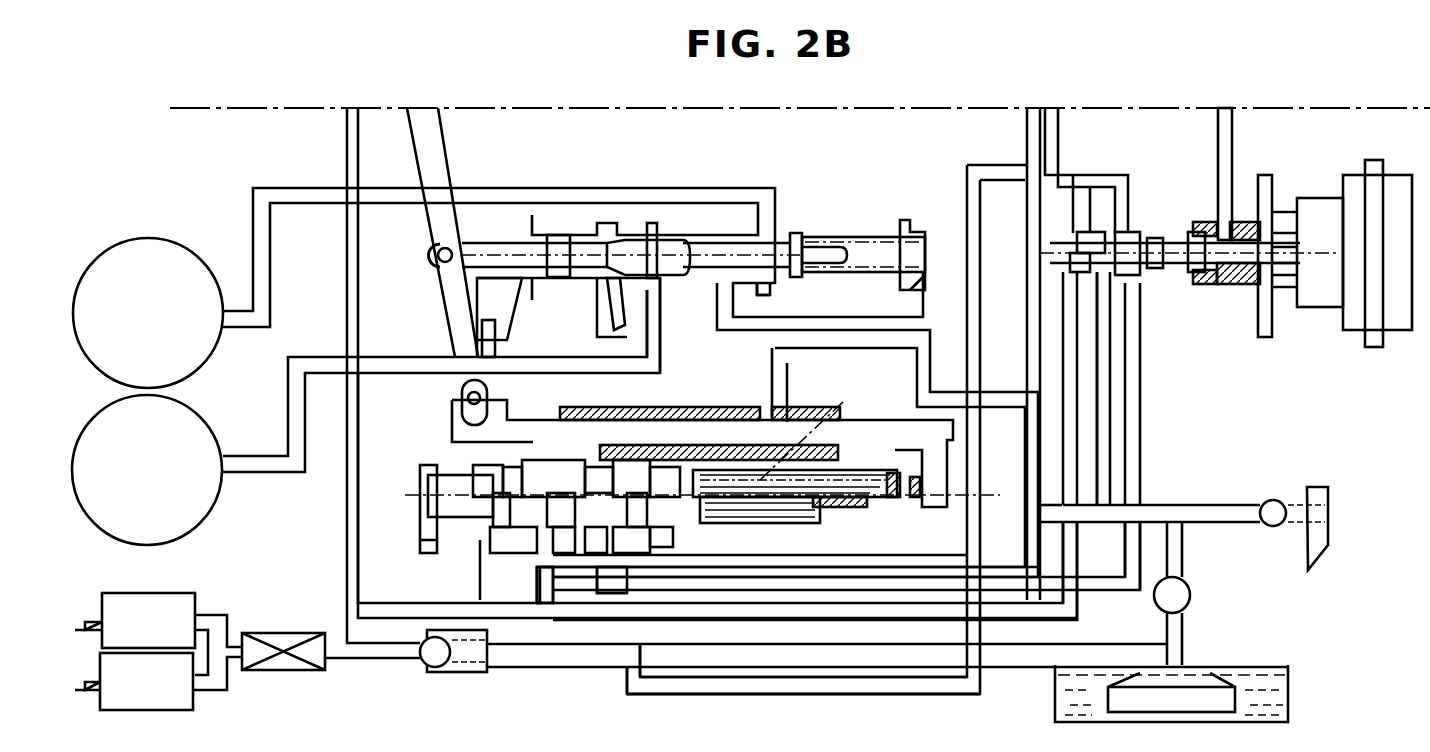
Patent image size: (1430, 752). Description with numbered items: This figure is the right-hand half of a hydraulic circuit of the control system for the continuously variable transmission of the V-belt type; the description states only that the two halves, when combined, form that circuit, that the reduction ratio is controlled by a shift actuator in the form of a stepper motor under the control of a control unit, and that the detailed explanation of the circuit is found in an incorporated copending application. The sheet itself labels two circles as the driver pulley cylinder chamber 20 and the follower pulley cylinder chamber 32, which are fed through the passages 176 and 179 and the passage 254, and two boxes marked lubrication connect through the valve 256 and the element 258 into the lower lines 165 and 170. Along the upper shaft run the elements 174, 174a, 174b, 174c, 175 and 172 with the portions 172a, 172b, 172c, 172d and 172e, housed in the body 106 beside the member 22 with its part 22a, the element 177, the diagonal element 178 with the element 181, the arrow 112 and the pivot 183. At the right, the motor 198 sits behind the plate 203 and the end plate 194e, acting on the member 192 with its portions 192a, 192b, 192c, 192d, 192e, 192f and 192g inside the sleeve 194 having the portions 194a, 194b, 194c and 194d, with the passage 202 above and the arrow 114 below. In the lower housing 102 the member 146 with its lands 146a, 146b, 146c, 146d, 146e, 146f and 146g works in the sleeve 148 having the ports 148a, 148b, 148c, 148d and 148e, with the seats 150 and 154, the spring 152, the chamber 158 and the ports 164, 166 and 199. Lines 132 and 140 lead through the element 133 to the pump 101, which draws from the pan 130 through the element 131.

The driver pulley cylinder chamber 20 is at (208, 522).
The movable wedge member 22 is at (512, 300).
The pin of wedge member 22a is at (492, 320).
The follower pulley cylinder chamber 32 is at (208, 365).
The oil pump 101 is at (1202, 592).
The valve housing 102 is at (425, 565).
The valve housing 106 is at (805, 186).
The belt tension direction 112 is at (409, 281).
The shaft direction 114 is at (1216, 362).
The oil pan 130 is at (1290, 680).
The oil filter 131 is at (1190, 683).
The oil passage 132 is at (833, 560).
The relief valve 133 is at (1280, 495).
The oil passage 140 is at (1112, 590).
The spool valve 146 is at (503, 492).
The spool land 146a is at (432, 528).
The spool land 146b is at (488, 585).
The spool land 146c is at (540, 485).
The spool land 146d is at (545, 590).
The spool land 146e is at (612, 600).
The spool land 146f is at (655, 560).
The spool land 146g is at (735, 470).
The valve sleeve 148 is at (430, 515).
The sleeve port 148a is at (458, 512).
The sleeve port 148b is at (423, 478).
The sleeve port 148c is at (578, 492).
The sleeve port 148d is at (635, 447).
The sleeve port 148e is at (680, 528).
The spring seat 150 is at (885, 510).
The spring 152 is at (845, 400).
The spring seat 154 is at (862, 500).
The valve chamber 158 is at (955, 430).
The oil port 164 is at (555, 640).
The oil passage 165 is at (685, 694).
The oil port 166 is at (520, 575).
The oil port 170 is at (700, 560).
The valve spool 172 is at (848, 238).
The spool land 172a is at (600, 295).
The spool land 172b is at (655, 290).
The oil passage 172c is at (692, 325).
The spool land 172d is at (770, 290).
The spool land 172e is at (915, 288).
The valve rod 174 is at (490, 245).
The rod collar 174a is at (558, 236).
The rod head 174b is at (688, 240).
The rod end 174c is at (782, 262).
The spring retainer 175 is at (900, 242).
The oil passage 176 is at (326, 378).
The lever 177 is at (620, 300).
The belt 178 is at (430, 158).
The oil passage 179 is at (310, 208).
The roller 181 is at (438, 252).
The pivot 183 is at (462, 410).
The valve spool 192 is at (1140, 232).
The spool land 192a is at (1073, 242).
The spool land 192b is at (1078, 272).
The oil passage 192c is at (1100, 272).
The oil passage 192d is at (1130, 272).
The spool land 192e is at (1155, 272).
The spool land 192f is at (1200, 284).
The spool land 192g is at (1225, 240).
The valve sleeve 194 is at (1070, 252).
The sleeve port 194a is at (1055, 232).
The sleeve port 194b is at (1070, 245).
The sleeve port 194c is at (1170, 215).
The sleeve port 194d is at (1195, 232).
The sleeve end plate 194e is at (1272, 215).
The stepper motor 198 is at (1387, 168).
The oil port 199 is at (622, 603).
The oil passage 202 is at (1080, 205).
The bearing plate 203 is at (1235, 165).
The oil passage 254 is at (345, 272).
The lubrication valve 256 is at (290, 633).
The check valve 258 is at (422, 662).